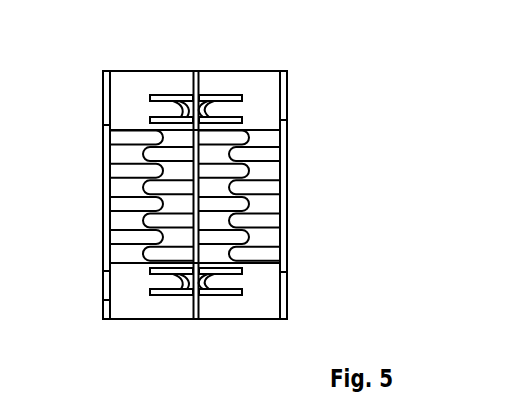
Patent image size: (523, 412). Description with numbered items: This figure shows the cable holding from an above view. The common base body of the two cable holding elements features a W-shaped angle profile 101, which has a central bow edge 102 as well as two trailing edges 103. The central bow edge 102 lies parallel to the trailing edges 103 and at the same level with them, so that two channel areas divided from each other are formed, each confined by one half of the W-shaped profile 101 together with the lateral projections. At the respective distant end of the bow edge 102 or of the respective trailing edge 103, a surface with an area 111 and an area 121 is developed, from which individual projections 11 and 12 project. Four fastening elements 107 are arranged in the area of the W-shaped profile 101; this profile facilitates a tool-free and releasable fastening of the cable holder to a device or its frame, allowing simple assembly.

The W-shaped angle profile 101 is at (219, 78).
The central bow edge 102 is at (194, 319).
The trailing edge 103 is at (105, 300).
The fastening element 107 is at (210, 103).
The projection 11 is at (147, 147).
The projection 12 is at (112, 141).
The area 111 is at (287, 134).
The area 121 is at (108, 126).